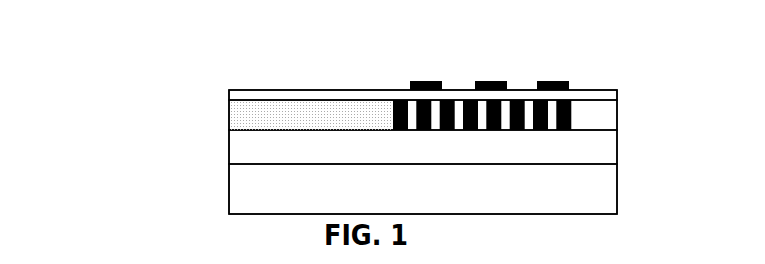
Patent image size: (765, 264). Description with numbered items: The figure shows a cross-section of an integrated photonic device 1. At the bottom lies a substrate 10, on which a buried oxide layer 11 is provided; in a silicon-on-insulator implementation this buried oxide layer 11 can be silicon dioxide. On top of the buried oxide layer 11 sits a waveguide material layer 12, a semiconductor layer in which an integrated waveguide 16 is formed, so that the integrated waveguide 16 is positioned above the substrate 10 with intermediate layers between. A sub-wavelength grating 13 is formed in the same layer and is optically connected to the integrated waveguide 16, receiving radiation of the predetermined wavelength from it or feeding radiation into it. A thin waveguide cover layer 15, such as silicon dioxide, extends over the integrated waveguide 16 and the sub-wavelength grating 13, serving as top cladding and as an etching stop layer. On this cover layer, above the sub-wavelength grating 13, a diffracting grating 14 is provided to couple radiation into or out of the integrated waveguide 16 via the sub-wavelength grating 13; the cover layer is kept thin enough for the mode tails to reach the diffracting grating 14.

The integrated photonic device 1 is at (145, 60).
The substrate 10 is at (253, 185).
The buried oxide layer 11 is at (230, 139).
The waveguide material layer 12 is at (229, 108).
The sub-wavelength grating 13 is at (580, 112).
The diffracting grating 14 is at (412, 80).
The waveguide cover layer 15 is at (229, 93).
The integrated waveguide 16 is at (303, 110).